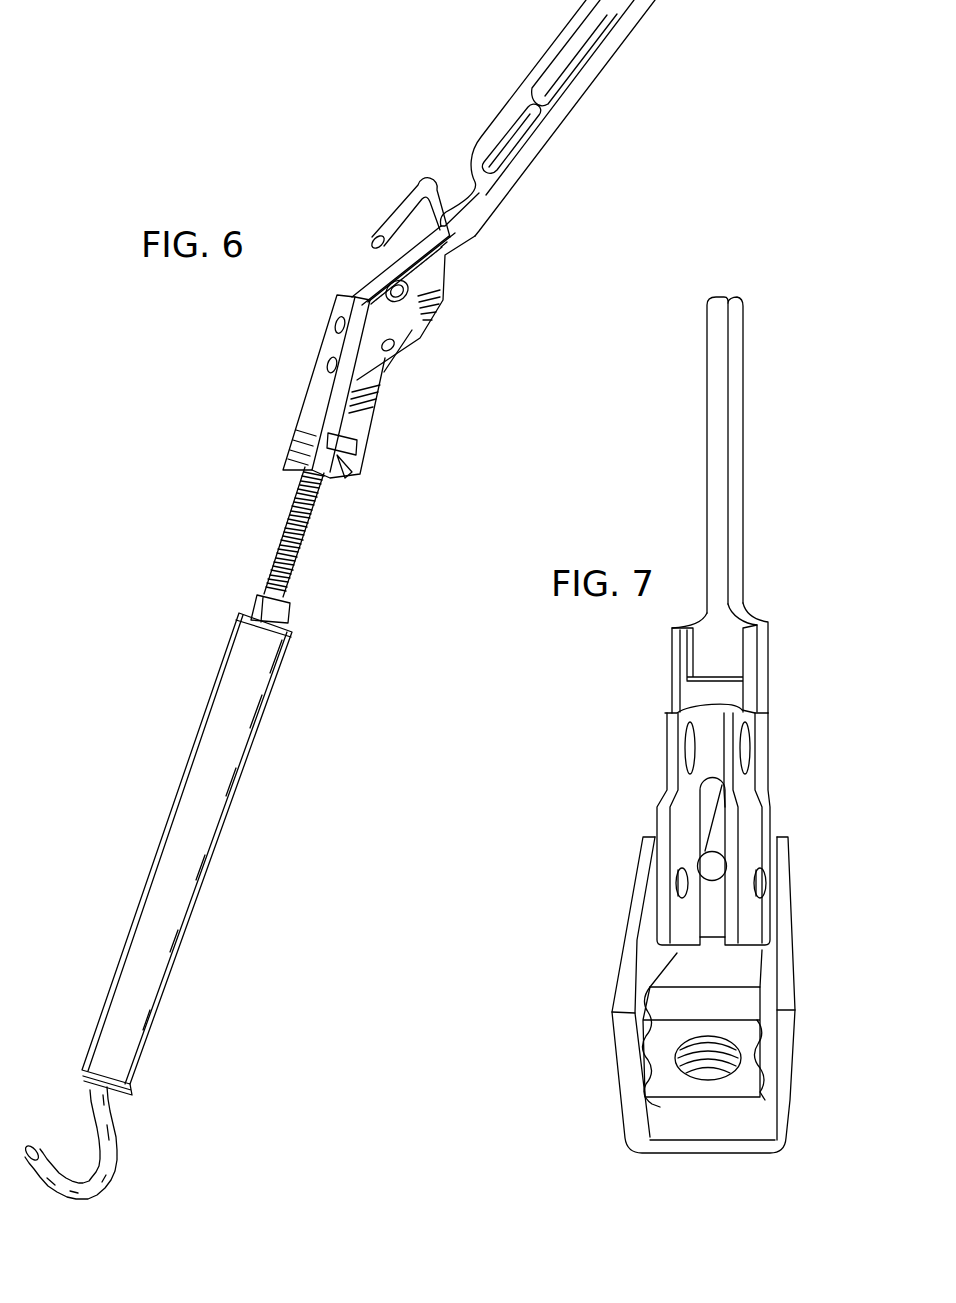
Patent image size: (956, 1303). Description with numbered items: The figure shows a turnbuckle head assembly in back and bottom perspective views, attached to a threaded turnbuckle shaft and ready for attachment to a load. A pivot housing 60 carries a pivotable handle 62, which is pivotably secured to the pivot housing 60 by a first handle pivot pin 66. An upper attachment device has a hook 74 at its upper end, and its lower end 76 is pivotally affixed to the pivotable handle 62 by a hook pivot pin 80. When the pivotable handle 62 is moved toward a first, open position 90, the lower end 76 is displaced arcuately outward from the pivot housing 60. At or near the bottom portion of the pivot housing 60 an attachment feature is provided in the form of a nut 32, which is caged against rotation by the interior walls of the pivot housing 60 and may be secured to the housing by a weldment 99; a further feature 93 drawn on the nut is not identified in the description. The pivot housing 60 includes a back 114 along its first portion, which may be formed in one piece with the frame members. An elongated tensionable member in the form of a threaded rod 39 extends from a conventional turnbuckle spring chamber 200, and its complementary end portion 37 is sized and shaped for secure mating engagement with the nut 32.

In FIG. 6, the nut 32 is at (355, 447).
In FIG. 7, the nut 32 is at (660, 1002).
In FIG. 6, the end portion 37 is at (347, 470).
In FIG. 6, the threaded rod 39 is at (293, 519).
In FIG. 6, the pivot housing 60 is at (312, 403).
In FIG. 7, the pivot housing 60 is at (787, 942).
In FIG. 6, the pivotable handle 62 is at (481, 207).
In FIG. 7, the pivotable handle 62 is at (718, 565).
In FIG. 6, the first handle pivot pin 66 is at (336, 323).
In FIG. 6, the hook 74 is at (402, 203).
In FIG. 7, the lower end 76 is at (716, 860).
In FIG. 6, the hook pivot pin 80 is at (408, 292).
In FIG. 6, the open position 90 is at (596, 78).
In FIG. 7, the open position 90 is at (706, 403).
In FIG. 7, the threaded bore 93 is at (712, 1065).
In FIG. 7, the weldment 99 is at (642, 1047).
In FIG. 7, the back 114 is at (707, 1154).
In FIG. 6, the turnbuckle spring chamber 200 is at (221, 843).